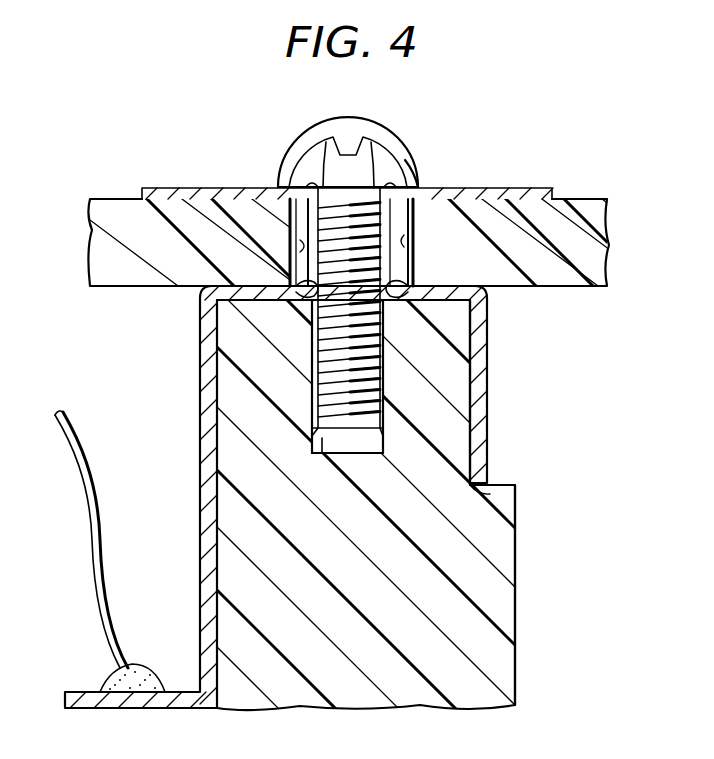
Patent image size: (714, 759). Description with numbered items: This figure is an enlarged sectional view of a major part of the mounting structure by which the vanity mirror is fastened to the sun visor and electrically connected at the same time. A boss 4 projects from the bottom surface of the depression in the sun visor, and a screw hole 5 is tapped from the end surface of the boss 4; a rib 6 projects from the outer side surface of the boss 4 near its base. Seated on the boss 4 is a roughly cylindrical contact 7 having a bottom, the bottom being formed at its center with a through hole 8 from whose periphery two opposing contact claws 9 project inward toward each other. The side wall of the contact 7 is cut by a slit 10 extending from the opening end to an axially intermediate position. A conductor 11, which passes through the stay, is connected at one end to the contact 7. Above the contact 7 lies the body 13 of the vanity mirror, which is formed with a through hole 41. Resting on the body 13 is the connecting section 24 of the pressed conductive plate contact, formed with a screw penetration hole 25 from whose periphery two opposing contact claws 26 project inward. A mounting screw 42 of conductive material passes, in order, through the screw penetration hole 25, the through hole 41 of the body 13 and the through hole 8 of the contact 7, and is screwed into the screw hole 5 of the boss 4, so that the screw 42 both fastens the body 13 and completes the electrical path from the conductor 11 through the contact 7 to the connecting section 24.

The boss 4 is at (235, 520).
The screw hole 5 is at (315, 372).
The rib 6 is at (505, 560).
The contact 7 is at (486, 404).
The through hole 8 is at (312, 305).
The contact claw 9 is at (290, 272).
The slit 10 is at (478, 492).
The conductor 11 is at (92, 496).
The body 13 is at (610, 216).
The connecting section 24 is at (167, 187).
The screw penetration hole 25 is at (313, 181).
The contact claw 26 is at (325, 175).
The through hole 41 is at (235, 187).
The mounting screw 42 is at (416, 174).